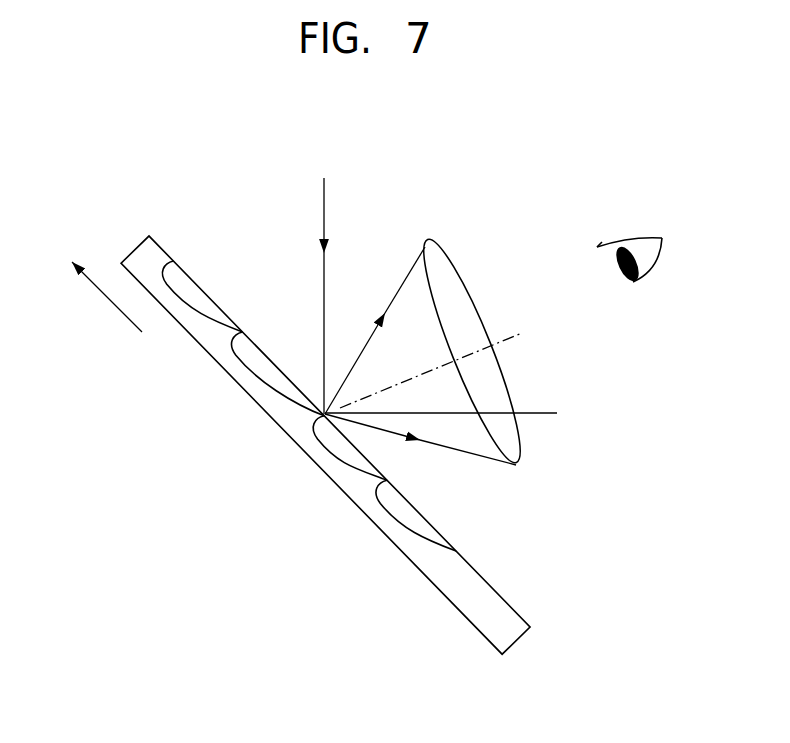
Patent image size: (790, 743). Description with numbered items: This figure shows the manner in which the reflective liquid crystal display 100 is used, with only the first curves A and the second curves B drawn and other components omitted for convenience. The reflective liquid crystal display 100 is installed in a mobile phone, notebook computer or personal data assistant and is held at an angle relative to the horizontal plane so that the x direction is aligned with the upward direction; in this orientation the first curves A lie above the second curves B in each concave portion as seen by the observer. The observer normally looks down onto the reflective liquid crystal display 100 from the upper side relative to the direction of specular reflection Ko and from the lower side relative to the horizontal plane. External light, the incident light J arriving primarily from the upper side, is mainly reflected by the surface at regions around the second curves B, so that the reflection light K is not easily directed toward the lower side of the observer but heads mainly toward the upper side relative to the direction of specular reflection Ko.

The reflective liquid crystal display 100 is at (520, 637).
The first curves A is at (243, 343).
The second curves B is at (284, 393).
The incident light J is at (322, 282).
The reflection light K is at (421, 295).
The direction of specular reflection Ko is at (458, 414).
The x direction x is at (99, 283).